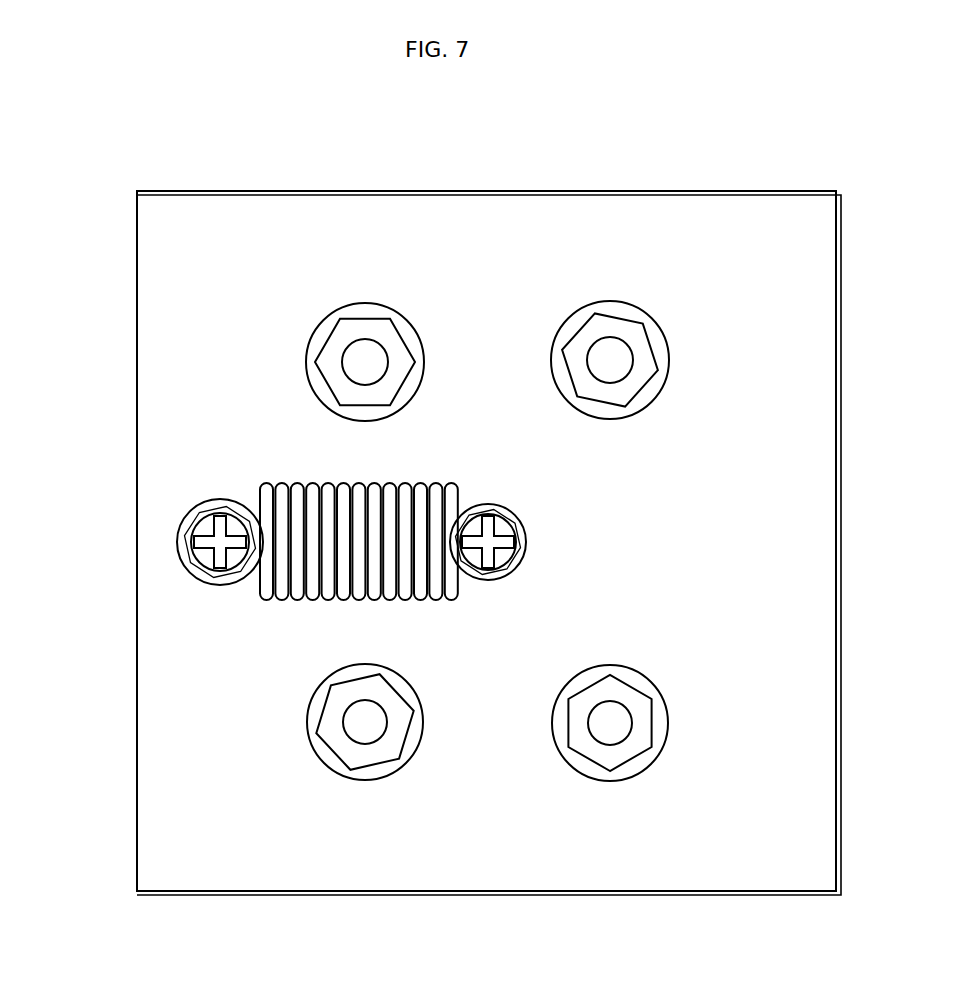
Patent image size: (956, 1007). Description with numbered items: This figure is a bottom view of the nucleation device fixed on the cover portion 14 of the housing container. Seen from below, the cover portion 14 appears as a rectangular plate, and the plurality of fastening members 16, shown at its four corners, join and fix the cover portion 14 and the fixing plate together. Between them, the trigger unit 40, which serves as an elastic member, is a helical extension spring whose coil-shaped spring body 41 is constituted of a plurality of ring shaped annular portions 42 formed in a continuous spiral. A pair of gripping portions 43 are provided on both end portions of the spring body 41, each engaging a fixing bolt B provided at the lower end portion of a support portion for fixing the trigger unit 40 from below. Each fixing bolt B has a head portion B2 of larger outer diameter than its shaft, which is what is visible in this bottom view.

The cover portion 14 is at (527, 211).
The fastening members 16 is at (608, 330).
The trigger unit 40 is at (359, 541).
The spring body 41 is at (395, 728).
The annular portions 42 is at (299, 674).
The gripping portions 43 is at (461, 705).
The fixing bolt B is at (517, 517).
The head portion B2 is at (196, 516).